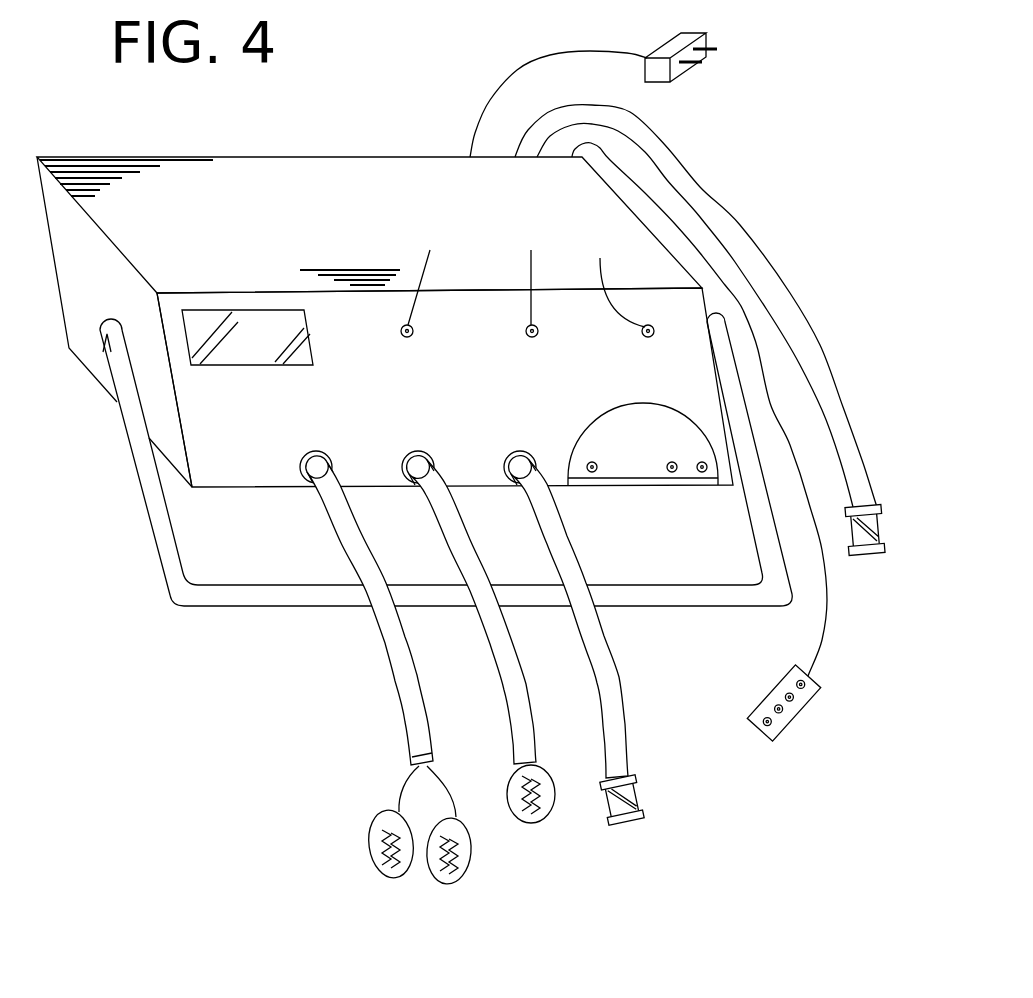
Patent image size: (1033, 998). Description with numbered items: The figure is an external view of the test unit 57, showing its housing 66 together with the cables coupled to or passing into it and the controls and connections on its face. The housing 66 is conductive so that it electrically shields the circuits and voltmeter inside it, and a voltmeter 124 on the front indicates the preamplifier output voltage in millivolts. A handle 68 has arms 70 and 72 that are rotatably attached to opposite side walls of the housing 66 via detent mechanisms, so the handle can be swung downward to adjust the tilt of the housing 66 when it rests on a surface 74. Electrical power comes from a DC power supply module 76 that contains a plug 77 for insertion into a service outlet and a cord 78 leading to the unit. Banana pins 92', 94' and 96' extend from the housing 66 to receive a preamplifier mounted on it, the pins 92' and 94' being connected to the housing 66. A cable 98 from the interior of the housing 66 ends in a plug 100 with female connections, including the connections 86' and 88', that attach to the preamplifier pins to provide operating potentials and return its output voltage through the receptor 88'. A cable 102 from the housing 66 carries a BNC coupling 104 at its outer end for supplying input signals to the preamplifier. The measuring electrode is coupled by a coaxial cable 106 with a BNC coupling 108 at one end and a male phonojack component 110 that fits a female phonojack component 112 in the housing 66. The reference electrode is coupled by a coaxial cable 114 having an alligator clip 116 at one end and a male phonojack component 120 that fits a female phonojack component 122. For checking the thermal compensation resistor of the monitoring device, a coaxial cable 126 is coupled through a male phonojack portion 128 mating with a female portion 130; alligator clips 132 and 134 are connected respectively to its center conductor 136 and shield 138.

The test unit 57 is at (702, 429).
The housing 66 is at (371, 205).
The handle 68 is at (411, 477).
The arm 70 is at (160, 568).
The arm 72 is at (720, 595).
The surface 74 is at (95, 483).
The DC power supply module 76 is at (706, 75).
The plug 77 is at (718, 50).
The cord 78 is at (538, 63).
The female connection 86' is at (826, 711).
The female receptor 88' is at (839, 684).
The banana pin 92' is at (628, 497).
The banana pin 94' is at (690, 500).
The banana pin 96' is at (727, 511).
The cable 98 is at (771, 408).
The plug 100 is at (781, 677).
The cable 102 is at (811, 344).
The BNC coupling 104 is at (862, 556).
The coaxial cable 106 is at (608, 645).
The BNC coupling 108 is at (644, 808).
The male phonojack component 110 is at (512, 483).
The female phonojack component 112 is at (536, 470).
The coaxial cable 114 is at (530, 705).
The alligator clip 116 is at (553, 813).
The male phonojack component 120 is at (415, 483).
The female phonojack component 122 is at (437, 459).
The voltmeter 124 is at (250, 322).
The coaxial cable 126 is at (400, 685).
The male phonojack portion 128 is at (305, 484).
The female phonojack portion 130 is at (336, 459).
The alligator clip 132 is at (368, 847).
The alligator clip 134 is at (463, 878).
The center conductor 136 is at (418, 768).
The shield 138 is at (403, 714).